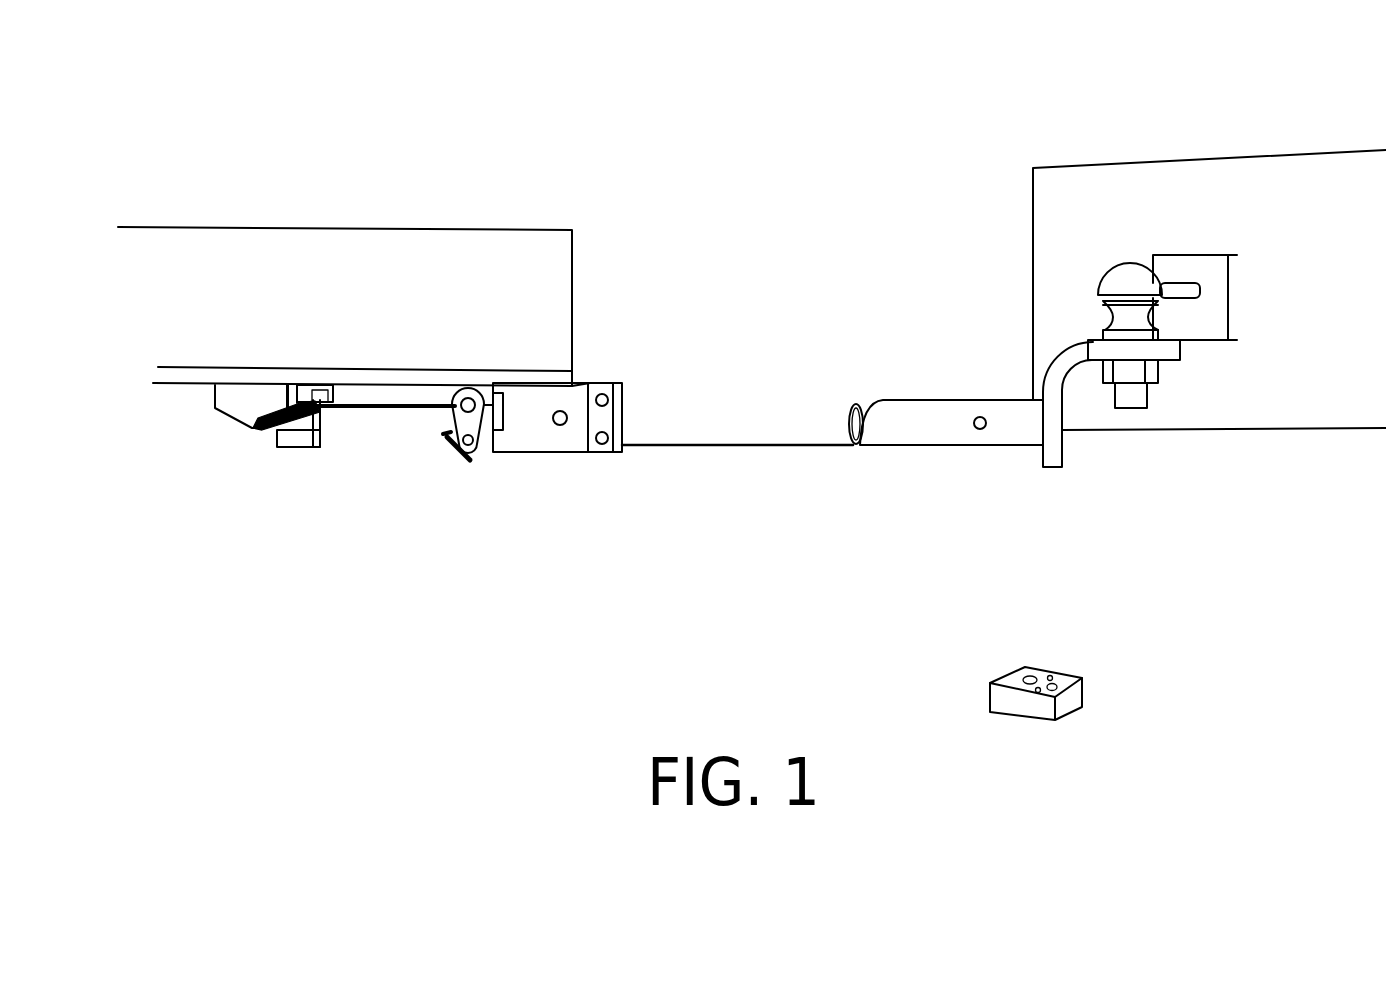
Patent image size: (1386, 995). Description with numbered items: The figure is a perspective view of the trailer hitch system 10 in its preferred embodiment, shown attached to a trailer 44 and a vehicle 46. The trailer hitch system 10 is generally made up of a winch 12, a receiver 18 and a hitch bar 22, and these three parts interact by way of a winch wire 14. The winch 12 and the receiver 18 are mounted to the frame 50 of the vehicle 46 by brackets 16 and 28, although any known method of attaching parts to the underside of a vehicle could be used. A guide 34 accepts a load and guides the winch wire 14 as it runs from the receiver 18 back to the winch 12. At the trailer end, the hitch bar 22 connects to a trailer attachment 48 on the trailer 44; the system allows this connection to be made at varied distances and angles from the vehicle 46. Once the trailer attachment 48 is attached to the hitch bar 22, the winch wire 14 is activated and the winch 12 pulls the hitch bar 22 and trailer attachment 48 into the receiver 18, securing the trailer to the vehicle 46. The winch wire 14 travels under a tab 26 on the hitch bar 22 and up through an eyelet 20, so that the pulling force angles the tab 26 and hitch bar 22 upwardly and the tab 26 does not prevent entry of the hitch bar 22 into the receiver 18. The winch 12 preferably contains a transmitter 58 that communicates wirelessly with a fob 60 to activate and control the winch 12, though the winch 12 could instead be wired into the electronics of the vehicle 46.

The trailer hitch system 10 is at (508, 515).
The winch 12 is at (243, 402).
The winch wire 14 is at (380, 410).
The bracket 16 is at (307, 397).
The receiver 18 is at (552, 437).
The eye loop 20 is at (853, 407).
The hitch bar 22 is at (947, 423).
The tab 26 is at (833, 443).
The bracket 28 is at (563, 383).
The guide 34 is at (457, 460).
The trailer 44 is at (1108, 240).
The vehicle 46 is at (488, 327).
The trailer attachment 48 is at (1118, 270).
The frame 50 is at (532, 375).
The transmitter 58 is at (302, 433).
The fob 60 is at (1060, 680).